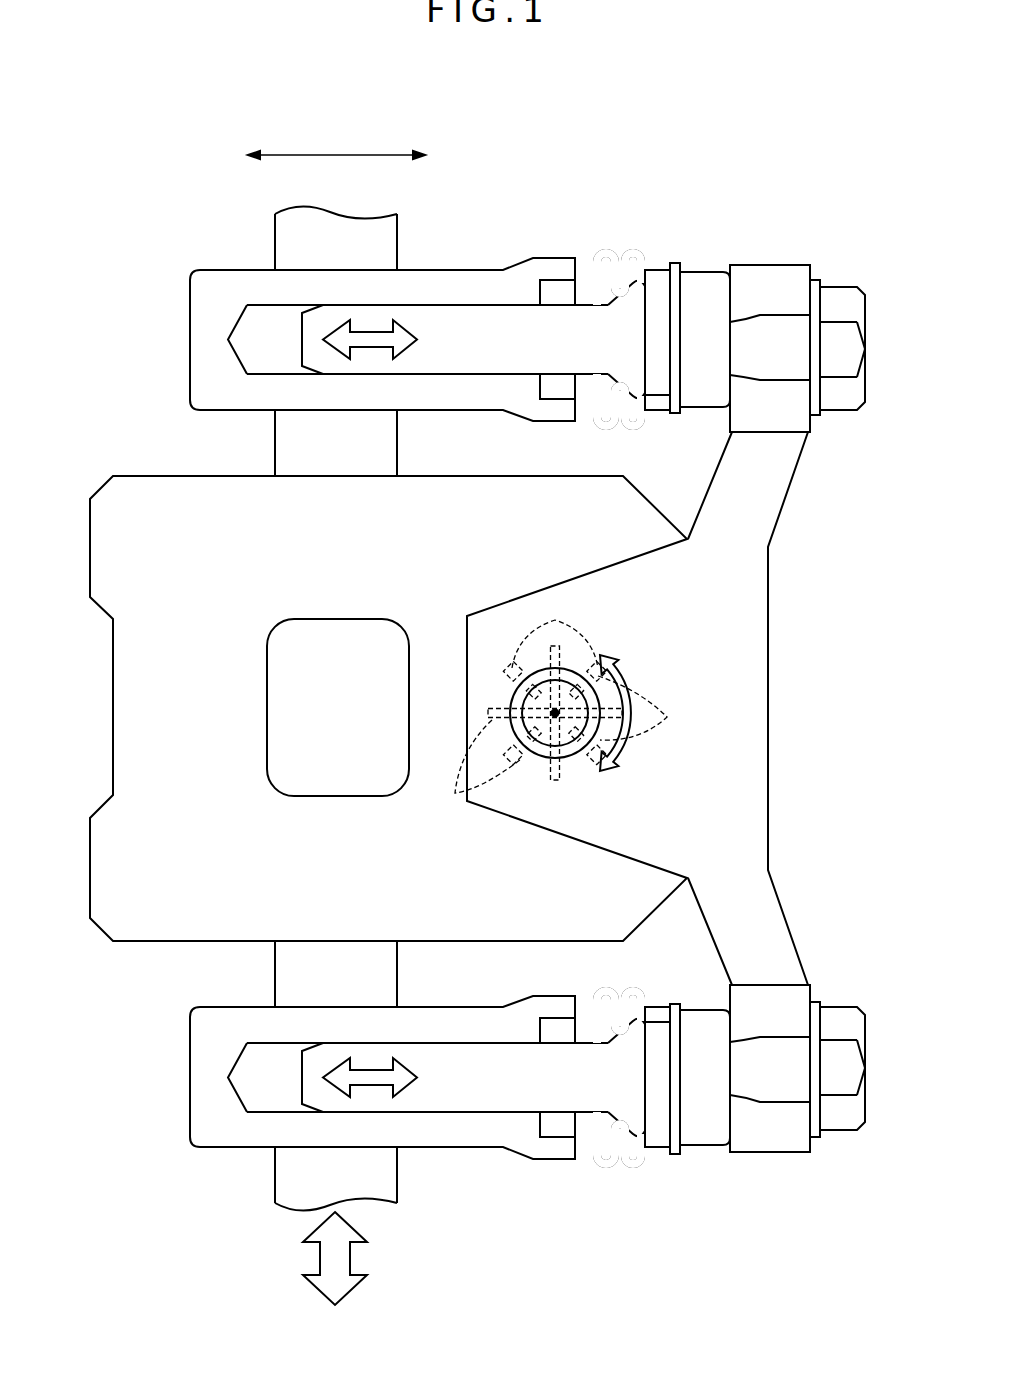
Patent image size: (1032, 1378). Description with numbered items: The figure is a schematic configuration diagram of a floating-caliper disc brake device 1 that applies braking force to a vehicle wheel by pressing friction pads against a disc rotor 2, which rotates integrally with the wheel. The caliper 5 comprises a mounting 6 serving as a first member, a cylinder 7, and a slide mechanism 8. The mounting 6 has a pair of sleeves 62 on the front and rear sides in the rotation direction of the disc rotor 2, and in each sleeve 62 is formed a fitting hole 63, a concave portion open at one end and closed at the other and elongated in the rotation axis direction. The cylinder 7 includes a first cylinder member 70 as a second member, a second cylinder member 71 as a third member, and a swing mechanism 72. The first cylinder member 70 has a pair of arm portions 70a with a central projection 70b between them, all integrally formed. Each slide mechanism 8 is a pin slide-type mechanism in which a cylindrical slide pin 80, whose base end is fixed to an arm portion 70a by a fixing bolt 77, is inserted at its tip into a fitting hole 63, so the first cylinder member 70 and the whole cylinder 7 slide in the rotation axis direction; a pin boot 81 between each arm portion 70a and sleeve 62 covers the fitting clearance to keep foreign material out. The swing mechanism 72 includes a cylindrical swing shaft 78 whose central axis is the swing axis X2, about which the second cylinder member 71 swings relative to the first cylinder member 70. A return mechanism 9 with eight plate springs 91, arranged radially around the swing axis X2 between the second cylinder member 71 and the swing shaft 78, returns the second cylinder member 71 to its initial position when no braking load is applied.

The disc brake device 1 is at (138, 193).
The disc rotor 2 is at (248, 441).
The caliper 5 is at (667, 136).
The mounting 6 is at (382, 678).
The cylinder 7 is at (725, 181).
The slide mechanism 8 is at (436, 678).
The return mechanism 9 is at (541, 703).
The sleeve 62 is at (220, 276).
The fitting hole 63 is at (281, 308).
The first cylinder member 70 is at (726, 700).
The arm portion 70a is at (770, 280).
The projection 70b is at (683, 800).
The second cylinder member 71 is at (560, 462).
The swing mechanism 72 is at (652, 668).
The fixing bolt 77 is at (840, 302).
The swing shaft 78 is at (586, 706).
The slide pin 80 is at (416, 292).
The pin boot 81 is at (661, 405).
The plate spring 91 is at (443, 797).
The swing axis X2 is at (560, 718).